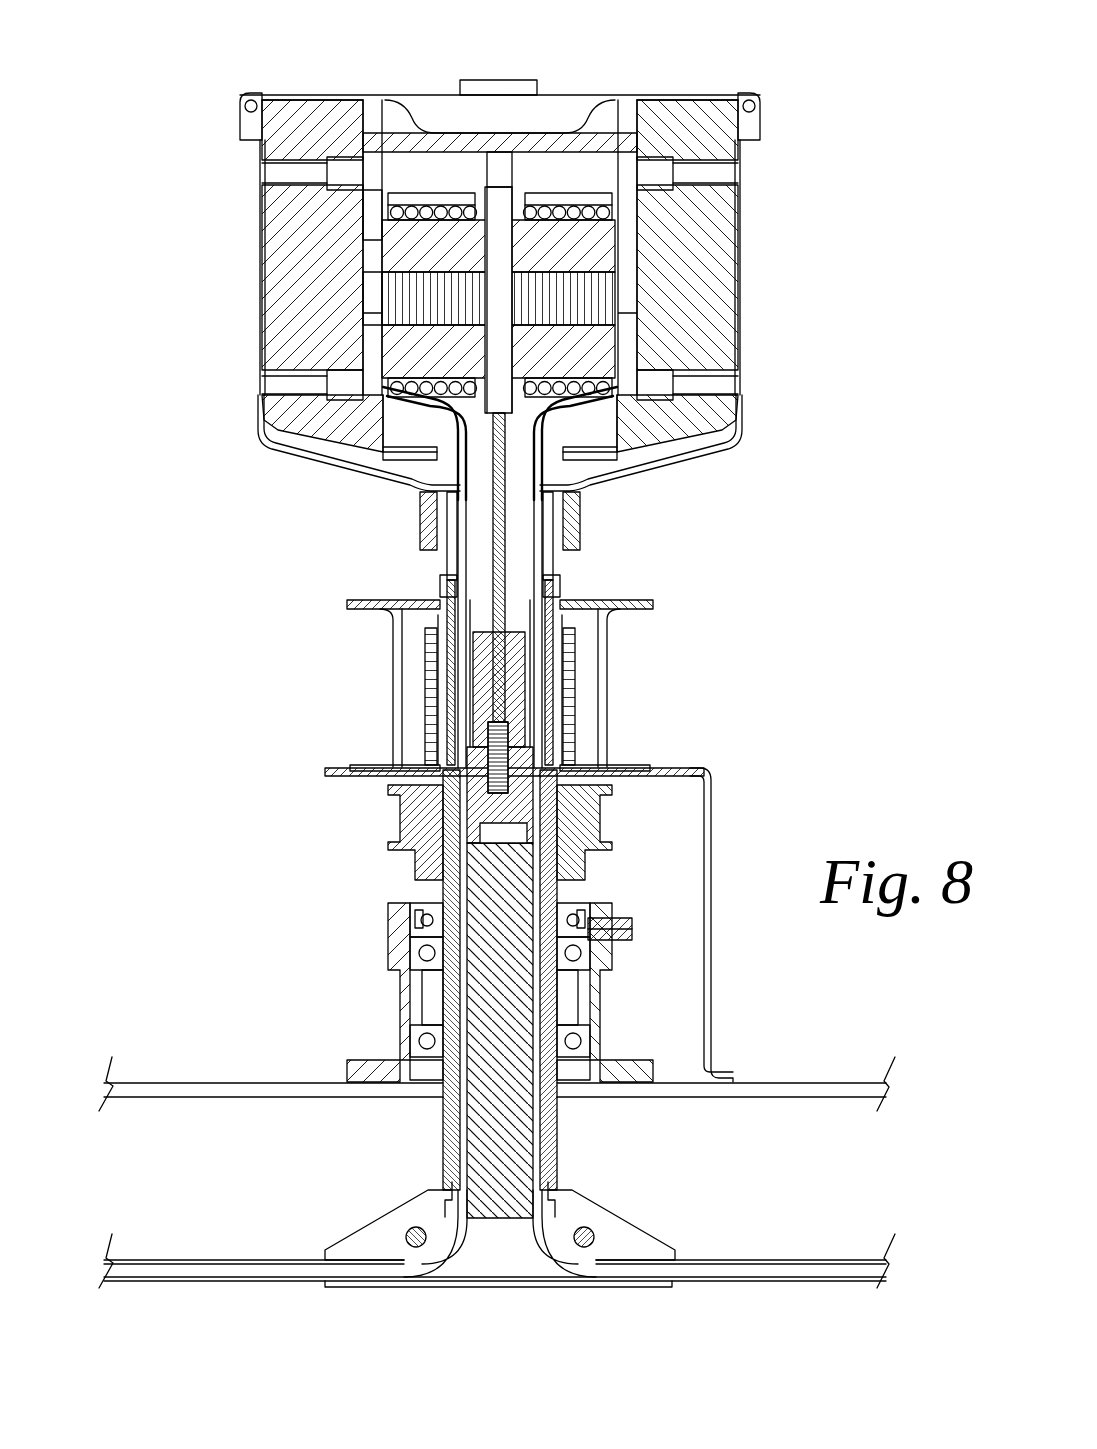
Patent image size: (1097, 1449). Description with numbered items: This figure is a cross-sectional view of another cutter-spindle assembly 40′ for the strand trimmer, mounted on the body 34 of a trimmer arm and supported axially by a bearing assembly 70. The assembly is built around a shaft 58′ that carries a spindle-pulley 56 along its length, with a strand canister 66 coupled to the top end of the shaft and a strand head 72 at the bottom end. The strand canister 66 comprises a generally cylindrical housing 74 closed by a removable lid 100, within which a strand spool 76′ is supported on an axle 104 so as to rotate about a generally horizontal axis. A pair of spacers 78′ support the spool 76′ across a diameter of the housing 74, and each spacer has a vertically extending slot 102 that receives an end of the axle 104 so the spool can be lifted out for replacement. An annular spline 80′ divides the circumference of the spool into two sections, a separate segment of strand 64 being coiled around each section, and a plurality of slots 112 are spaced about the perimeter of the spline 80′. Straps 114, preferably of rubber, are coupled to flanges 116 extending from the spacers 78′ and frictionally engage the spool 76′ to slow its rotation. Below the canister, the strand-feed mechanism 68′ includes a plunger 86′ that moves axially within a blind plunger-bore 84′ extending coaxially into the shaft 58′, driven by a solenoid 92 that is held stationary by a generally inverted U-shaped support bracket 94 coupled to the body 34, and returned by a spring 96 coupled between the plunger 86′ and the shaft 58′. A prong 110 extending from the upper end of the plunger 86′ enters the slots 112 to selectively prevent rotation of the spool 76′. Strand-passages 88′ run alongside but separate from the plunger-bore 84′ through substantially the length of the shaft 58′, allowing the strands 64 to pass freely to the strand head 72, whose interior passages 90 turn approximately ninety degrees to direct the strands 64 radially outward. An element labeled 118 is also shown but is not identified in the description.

The cutter-spindle assembly 40′ is at (104, 106).
The lid 100 is at (298, 98).
The housing 74 is at (742, 359).
The strand canister 66 is at (752, 288).
The spacers 78′ is at (276, 340).
The spool 76′ is at (622, 242).
The slot 102 is at (372, 212).
The axle 104 is at (372, 294).
The spline 80′ is at (533, 140).
The straps 114 is at (413, 195).
The strand 64 is at (447, 195).
The slots 112 is at (497, 190).
The flanges 116 is at (407, 448).
The prong 110 is at (507, 478).
The sleeve 118 is at (475, 687).
The strand-feed mechanism 68′ is at (222, 634).
The solenoid 92 is at (425, 629).
The plunger 86′ is at (488, 662).
The plunger-bore 84′ is at (533, 760).
The strand-passages 88′ is at (463, 902).
The spring 96 is at (508, 735).
The shaft 58′ is at (553, 810).
The spindle-pulley 56 is at (593, 822).
The support bracket 94 is at (700, 770).
The bearing assembly 70 is at (372, 999).
The body 34 is at (808, 1081).
The interior passages 90 is at (463, 1265).
The strand head 72 is at (642, 1236).